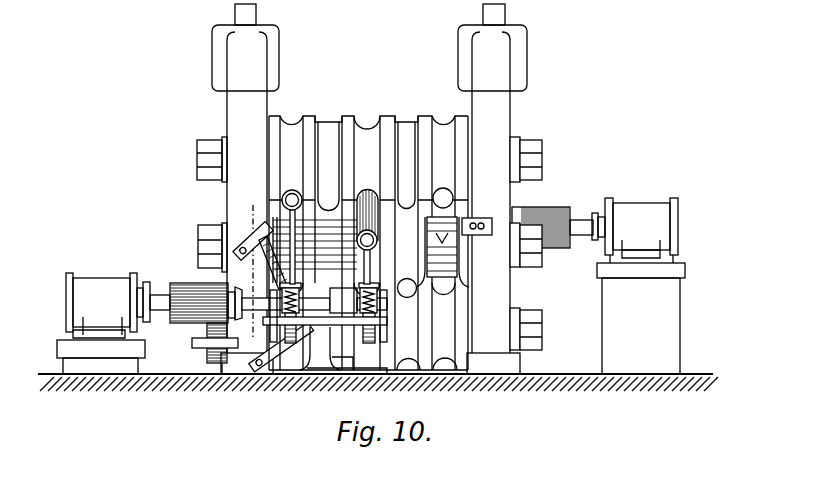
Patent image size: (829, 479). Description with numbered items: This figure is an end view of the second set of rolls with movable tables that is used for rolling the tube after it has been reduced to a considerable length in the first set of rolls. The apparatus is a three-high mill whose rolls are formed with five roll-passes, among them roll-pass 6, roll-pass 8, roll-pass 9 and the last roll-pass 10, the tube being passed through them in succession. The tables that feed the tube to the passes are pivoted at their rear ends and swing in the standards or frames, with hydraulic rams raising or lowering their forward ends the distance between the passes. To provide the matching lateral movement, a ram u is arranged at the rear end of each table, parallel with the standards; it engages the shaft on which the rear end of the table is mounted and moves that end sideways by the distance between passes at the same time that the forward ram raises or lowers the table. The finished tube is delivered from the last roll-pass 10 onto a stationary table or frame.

The roll-pass 6 is at (292, 229).
The roll-pass 8 is at (367, 230).
The roll-pass 9 is at (407, 288).
The roll-pass 10 is at (442, 237).
The ram u is at (636, 213).